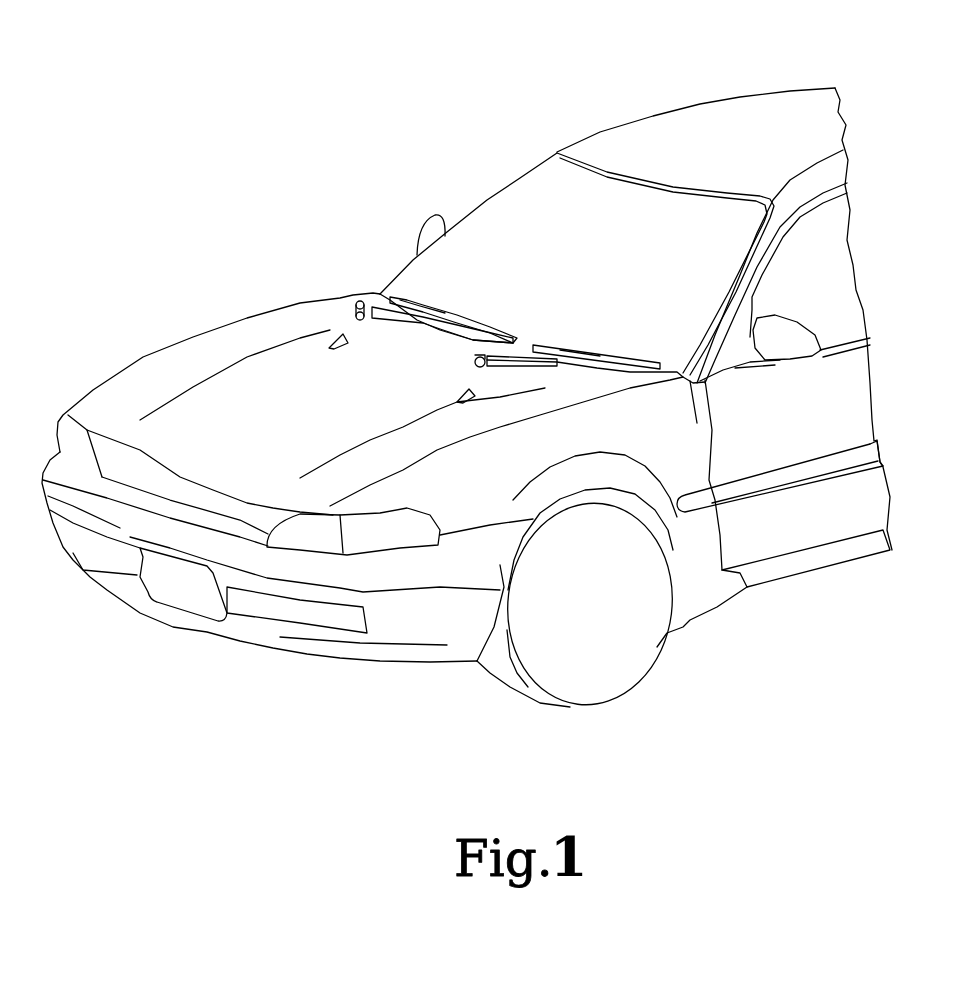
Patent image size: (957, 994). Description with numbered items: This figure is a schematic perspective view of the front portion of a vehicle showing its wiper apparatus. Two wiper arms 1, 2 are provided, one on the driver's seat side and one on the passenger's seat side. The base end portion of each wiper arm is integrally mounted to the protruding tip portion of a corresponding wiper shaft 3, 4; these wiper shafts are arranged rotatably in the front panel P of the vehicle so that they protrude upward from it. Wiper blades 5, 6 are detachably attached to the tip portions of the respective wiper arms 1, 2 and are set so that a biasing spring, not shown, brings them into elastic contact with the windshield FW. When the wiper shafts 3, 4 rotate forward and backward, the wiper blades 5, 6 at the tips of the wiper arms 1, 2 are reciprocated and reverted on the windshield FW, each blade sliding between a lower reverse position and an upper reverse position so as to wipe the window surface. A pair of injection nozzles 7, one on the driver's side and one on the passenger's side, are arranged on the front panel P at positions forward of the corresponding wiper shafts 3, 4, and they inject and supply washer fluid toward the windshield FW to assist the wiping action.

The wiper arm 1 is at (442, 244).
The wiper arm 2 is at (583, 552).
The wiper shaft 3 is at (328, 252).
The wiper shaft 4 is at (309, 547).
The wiper blade 5 is at (453, 224).
The wiper blade 6 is at (730, 288).
The injection nozzle 7 is at (351, 499).
The front panel P is at (334, 377).
The windshield FW is at (577, 202).